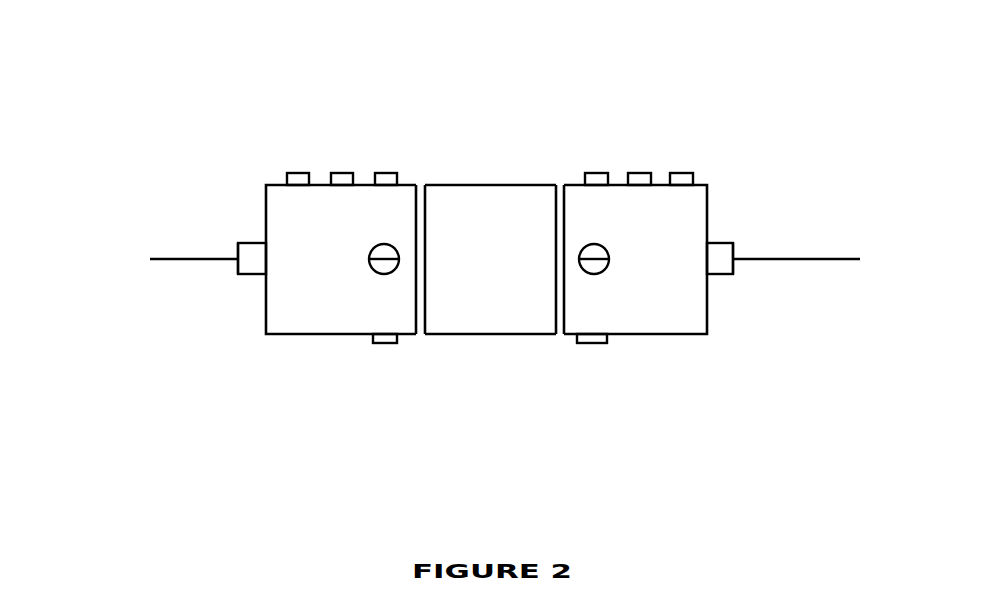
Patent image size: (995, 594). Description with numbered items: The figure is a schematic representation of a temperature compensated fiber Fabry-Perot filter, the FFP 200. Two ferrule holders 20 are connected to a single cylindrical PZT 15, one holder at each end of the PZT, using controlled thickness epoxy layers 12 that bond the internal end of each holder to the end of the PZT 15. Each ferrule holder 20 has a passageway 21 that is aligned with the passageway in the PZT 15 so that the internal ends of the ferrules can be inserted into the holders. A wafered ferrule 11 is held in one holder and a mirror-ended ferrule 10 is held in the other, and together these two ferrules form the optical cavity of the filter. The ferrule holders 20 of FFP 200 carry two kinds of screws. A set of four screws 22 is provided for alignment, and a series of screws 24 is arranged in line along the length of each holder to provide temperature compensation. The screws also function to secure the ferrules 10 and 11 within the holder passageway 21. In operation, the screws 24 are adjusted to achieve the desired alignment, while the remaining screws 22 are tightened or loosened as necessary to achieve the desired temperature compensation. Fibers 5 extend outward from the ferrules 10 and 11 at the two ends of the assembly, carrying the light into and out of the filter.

The temperature compensated FFP 200 is at (770, 46).
The ferrule holder 20 is at (281, 350).
The PZT 15 is at (490, 335).
The controlled thickness epoxy layer 12 is at (556, 185).
The screw 24 is at (341, 173).
The screw 22 is at (386, 173).
The passageway 21 is at (262, 276).
The wafered ferrule 11 is at (247, 243).
The mirror-ended ferrule 10 is at (733, 268).
The cable 5 is at (177, 258).